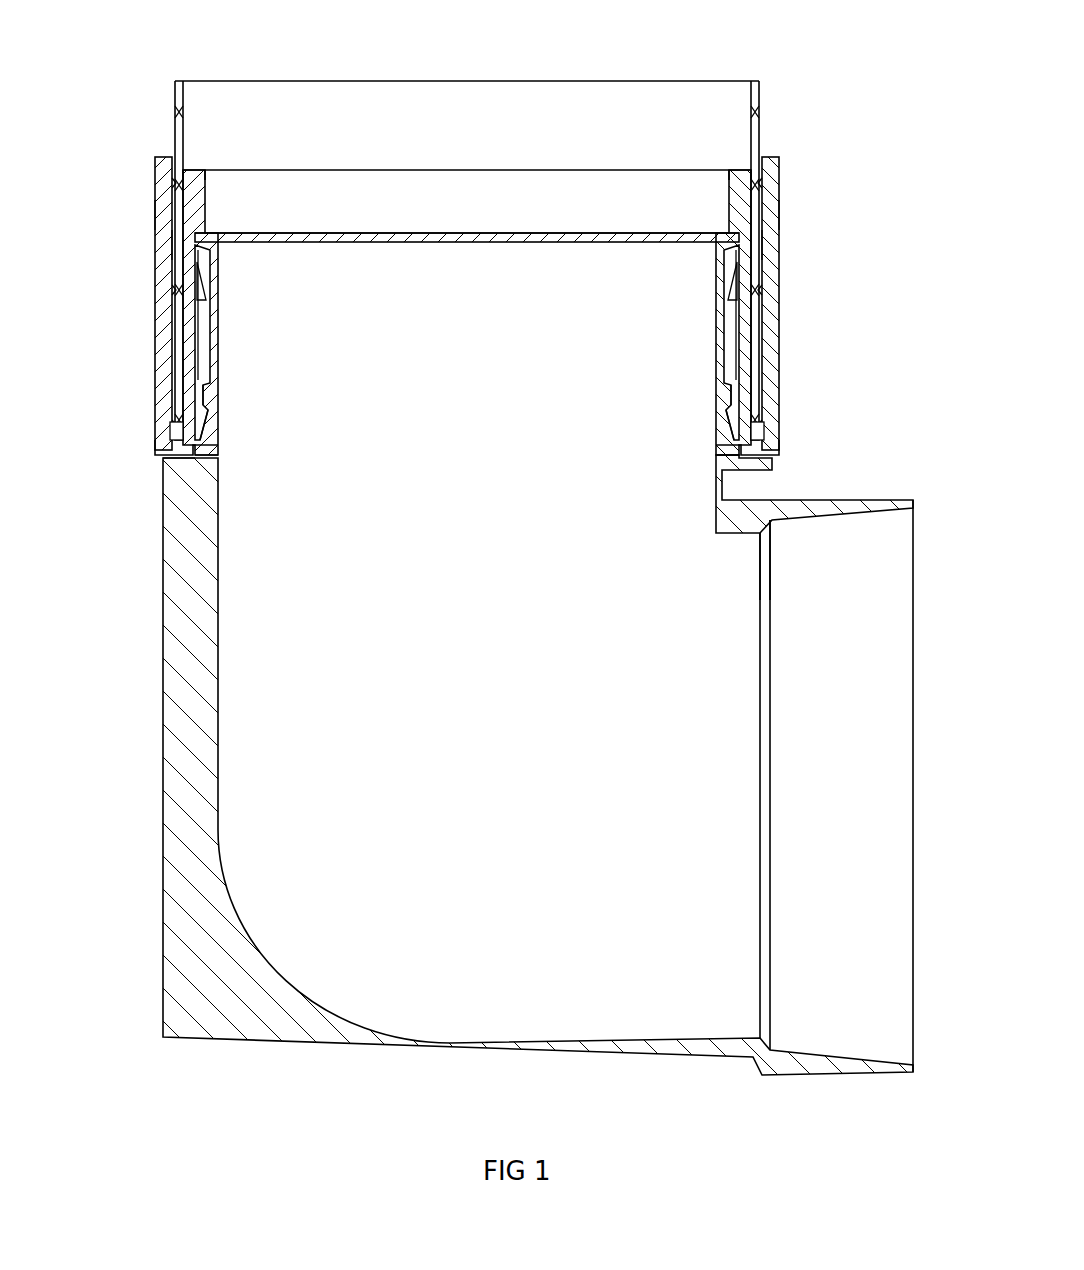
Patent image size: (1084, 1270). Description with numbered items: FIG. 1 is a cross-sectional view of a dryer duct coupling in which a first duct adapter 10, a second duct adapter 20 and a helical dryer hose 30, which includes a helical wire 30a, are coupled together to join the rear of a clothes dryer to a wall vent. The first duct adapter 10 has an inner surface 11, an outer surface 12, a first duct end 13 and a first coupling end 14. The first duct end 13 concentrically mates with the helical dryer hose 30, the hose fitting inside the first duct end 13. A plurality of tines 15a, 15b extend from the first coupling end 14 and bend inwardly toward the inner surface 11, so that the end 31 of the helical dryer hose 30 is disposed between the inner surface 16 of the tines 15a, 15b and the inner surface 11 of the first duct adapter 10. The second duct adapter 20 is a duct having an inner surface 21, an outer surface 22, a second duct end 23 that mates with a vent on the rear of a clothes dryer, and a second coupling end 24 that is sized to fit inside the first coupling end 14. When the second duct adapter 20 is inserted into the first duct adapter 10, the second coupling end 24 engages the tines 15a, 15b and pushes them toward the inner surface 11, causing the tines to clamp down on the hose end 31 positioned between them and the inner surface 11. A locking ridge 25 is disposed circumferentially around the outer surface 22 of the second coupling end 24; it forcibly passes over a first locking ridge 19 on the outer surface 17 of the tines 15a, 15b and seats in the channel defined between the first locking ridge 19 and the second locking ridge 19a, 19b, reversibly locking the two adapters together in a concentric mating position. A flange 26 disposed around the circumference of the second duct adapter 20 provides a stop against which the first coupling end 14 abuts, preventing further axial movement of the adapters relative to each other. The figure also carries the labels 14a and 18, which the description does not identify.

The first duct adapter 10 is at (152, 268).
The inner surface 11 is at (160, 215).
The outer surface 12 is at (162, 245).
The first duct end 13 is at (167, 157).
The first coupling end 14 is at (178, 458).
The inner wall bottom 14a is at (210, 455).
The tine 15a is at (728, 312).
The tine 15b is at (206, 312).
The inner surface of the plurality of tines 16 is at (185, 175).
The outer surface of the plurality of tines 17 is at (195, 205).
The sealing ring 18 is at (173, 183).
The first locking ridge 19 is at (210, 412).
The second locking ridge 19a is at (212, 238).
The second locking ridge 19b is at (722, 238).
The second duct adapter 20 is at (801, 523).
The inner surface 21 is at (215, 345).
The outer surface 22 is at (206, 332).
The second duct end 23 is at (912, 503).
The second coupling end 24 is at (205, 240).
The locking ridge 25 is at (207, 395).
The flange 26 is at (190, 462).
The helical dryer hose 30 is at (179, 77).
The helical wire 30a is at (188, 110).
The end of the helical dryer hose duct 31 is at (175, 440).